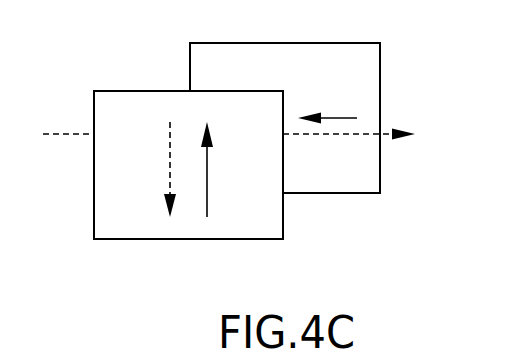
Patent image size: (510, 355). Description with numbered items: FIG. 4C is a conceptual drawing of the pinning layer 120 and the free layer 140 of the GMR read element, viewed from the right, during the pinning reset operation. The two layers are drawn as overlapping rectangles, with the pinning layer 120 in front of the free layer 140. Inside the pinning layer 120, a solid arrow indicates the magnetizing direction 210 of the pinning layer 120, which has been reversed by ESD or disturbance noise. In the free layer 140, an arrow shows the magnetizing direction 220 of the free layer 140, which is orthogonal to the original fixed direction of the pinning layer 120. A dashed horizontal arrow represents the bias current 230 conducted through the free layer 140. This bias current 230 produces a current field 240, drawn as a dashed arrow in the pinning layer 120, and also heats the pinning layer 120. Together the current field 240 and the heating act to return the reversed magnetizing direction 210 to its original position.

The pinning layer 120 is at (94, 111).
The free layer 140 is at (190, 64).
The magnetizing direction 210 is at (208, 152).
The magnetizing direction 220 is at (340, 118).
The bias current 230 is at (320, 137).
The current field 240 is at (168, 141).